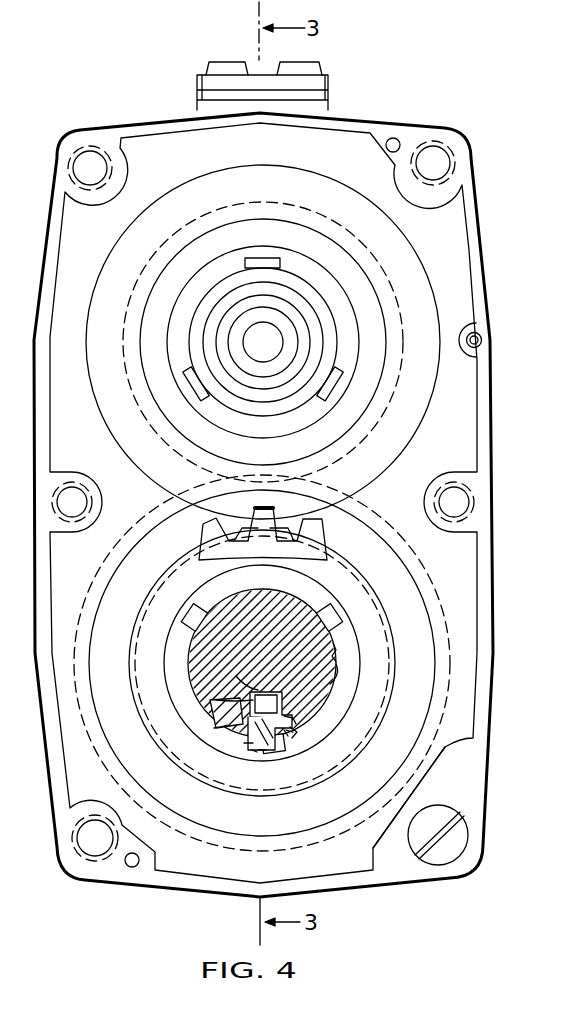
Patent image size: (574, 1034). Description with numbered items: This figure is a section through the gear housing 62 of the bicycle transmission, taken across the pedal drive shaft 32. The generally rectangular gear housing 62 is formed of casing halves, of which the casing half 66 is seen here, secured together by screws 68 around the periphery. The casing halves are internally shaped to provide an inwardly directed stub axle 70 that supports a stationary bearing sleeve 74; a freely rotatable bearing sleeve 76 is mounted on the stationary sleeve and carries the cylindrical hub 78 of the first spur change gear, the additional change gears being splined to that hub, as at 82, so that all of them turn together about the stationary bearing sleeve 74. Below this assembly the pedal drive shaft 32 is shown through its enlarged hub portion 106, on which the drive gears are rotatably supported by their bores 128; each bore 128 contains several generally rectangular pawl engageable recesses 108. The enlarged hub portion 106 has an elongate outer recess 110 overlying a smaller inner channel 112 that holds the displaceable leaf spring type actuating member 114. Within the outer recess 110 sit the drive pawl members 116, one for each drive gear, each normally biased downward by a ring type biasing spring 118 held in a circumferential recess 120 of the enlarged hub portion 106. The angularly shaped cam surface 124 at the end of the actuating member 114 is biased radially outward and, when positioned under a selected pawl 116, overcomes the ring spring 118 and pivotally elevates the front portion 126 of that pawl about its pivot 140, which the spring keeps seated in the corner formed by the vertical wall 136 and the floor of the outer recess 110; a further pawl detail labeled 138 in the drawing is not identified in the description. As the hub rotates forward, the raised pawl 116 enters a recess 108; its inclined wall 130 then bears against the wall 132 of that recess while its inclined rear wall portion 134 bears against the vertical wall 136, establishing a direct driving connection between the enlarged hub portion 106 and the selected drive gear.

The pedal drive shaft 32 is at (330, 566).
The gear housing 62 is at (492, 784).
The casing half 66 is at (400, 868).
The screws 68 is at (90, 160).
The stub axle 70 is at (293, 343).
The stationary bearing sleeve 74 is at (302, 323).
The freely rotatable bearing sleeve 76 is at (307, 302).
The cylindrical hub 78 is at (297, 280).
The spline 82 is at (268, 259).
The enlarged hub portion 106 is at (280, 627).
The pawl engageable recesses 108 is at (195, 610).
The outer recess 110 is at (227, 725).
The inner channel 112 is at (220, 697).
The leaf spring type actuating member 114 is at (248, 683).
The drive pawl members 116 is at (240, 767).
The ring type biasing springs 118 is at (287, 733).
The circumferential recesses 120 is at (337, 670).
The cam surface 124 is at (270, 690).
The front portion 126 is at (257, 752).
The bores 128 is at (333, 647).
The inclined wall 130 is at (253, 743).
The wall of the recess 132 is at (253, 700).
The inclined rear wall portion 134 is at (293, 718).
The vertical wall 136 is at (297, 732).
The pawl pin 138 is at (263, 752).
The pivot 140 is at (293, 732).